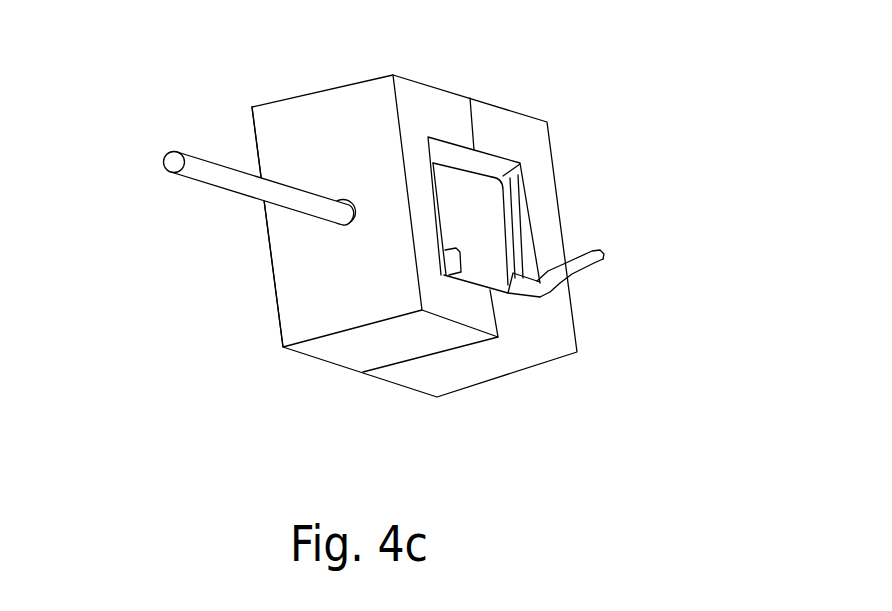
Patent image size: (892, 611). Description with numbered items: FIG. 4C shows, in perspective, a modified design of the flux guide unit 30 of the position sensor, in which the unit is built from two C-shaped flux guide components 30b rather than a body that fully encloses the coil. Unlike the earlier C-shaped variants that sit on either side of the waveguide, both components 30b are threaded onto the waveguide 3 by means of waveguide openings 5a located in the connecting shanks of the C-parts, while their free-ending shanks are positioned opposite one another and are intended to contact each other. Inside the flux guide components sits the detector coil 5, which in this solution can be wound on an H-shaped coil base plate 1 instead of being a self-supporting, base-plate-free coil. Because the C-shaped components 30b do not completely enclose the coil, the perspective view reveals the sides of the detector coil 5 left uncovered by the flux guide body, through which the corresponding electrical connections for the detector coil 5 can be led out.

The H-shaped coil base plate 1 is at (517, 202).
The waveguide 3 is at (167, 148).
The detector coil 5 is at (463, 219).
The waveguide opening 5a is at (333, 223).
The flux guide unit 30 is at (635, 237).
The C-shaped flux guide component 30b is at (535, 137).